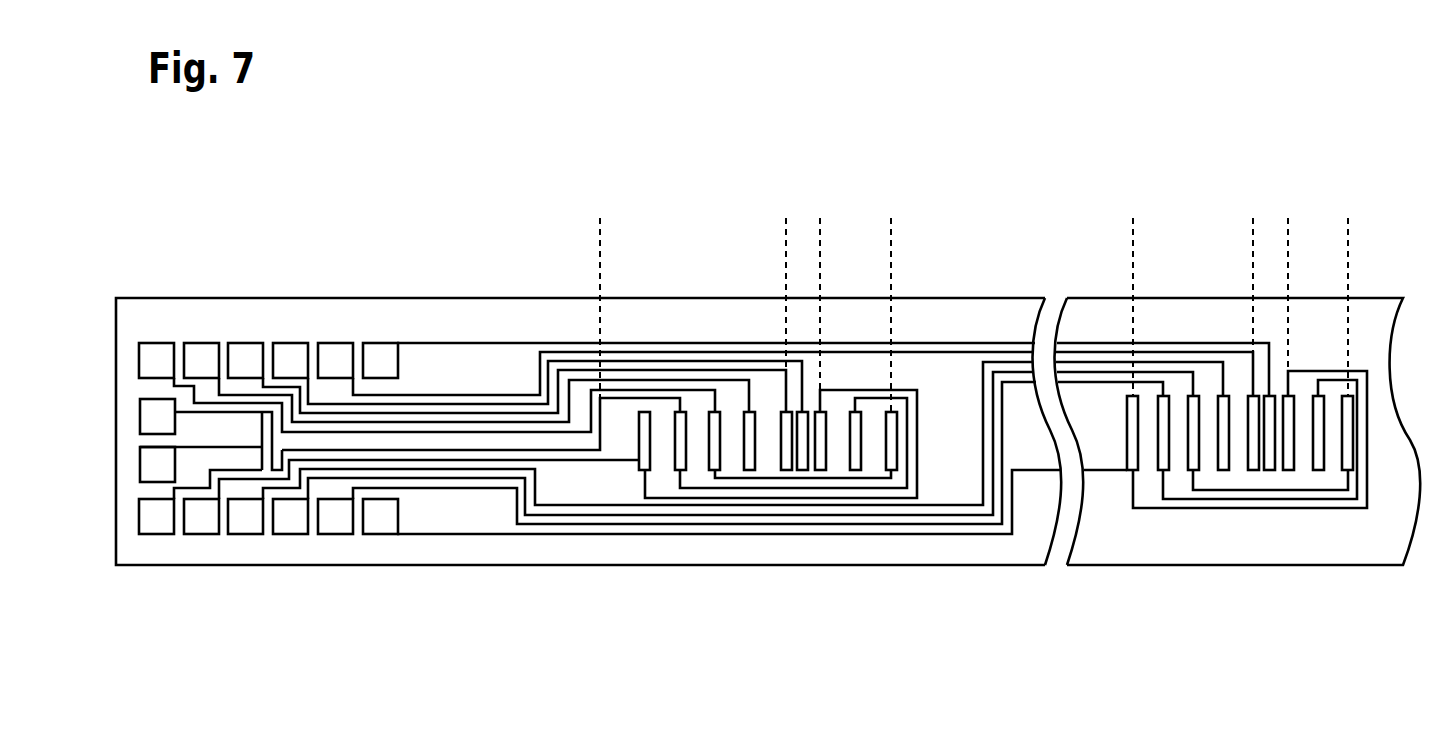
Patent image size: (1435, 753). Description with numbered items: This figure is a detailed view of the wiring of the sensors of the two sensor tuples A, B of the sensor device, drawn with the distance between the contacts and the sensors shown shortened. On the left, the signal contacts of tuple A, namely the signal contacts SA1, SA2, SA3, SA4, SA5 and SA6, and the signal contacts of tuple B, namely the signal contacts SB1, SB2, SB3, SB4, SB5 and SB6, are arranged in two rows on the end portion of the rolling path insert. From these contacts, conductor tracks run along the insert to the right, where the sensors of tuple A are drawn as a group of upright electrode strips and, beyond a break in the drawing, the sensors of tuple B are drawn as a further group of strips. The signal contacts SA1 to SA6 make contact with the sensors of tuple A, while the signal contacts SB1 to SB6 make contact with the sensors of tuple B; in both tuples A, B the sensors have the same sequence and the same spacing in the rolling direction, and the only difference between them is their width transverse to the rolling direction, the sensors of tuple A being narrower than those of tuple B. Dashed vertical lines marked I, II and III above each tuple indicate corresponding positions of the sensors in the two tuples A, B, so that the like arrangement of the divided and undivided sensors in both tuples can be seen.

The signal contact SA1 is at (202, 516).
The signal contact SA2 is at (202, 360).
The signal contact SA3 is at (159, 516).
The signal contact SA4 is at (247, 360).
The signal contact SA5 is at (159, 360).
The signal contact SA6 is at (292, 360).
The signal contact SB1 is at (380, 516).
The signal contact SB2 is at (246, 516).
The signal contact SB3 is at (336, 516).
The signal contact SB4 is at (335, 360).
The signal contact SB5 is at (291, 516).
The signal contact SB6 is at (380, 360).
The tuple A is at (599, 517).
The tuple B is at (1247, 508).
The electrode position I is at (878, 308).
The electrode position II is at (1037, 304).
The electrode position III is at (1091, 315).